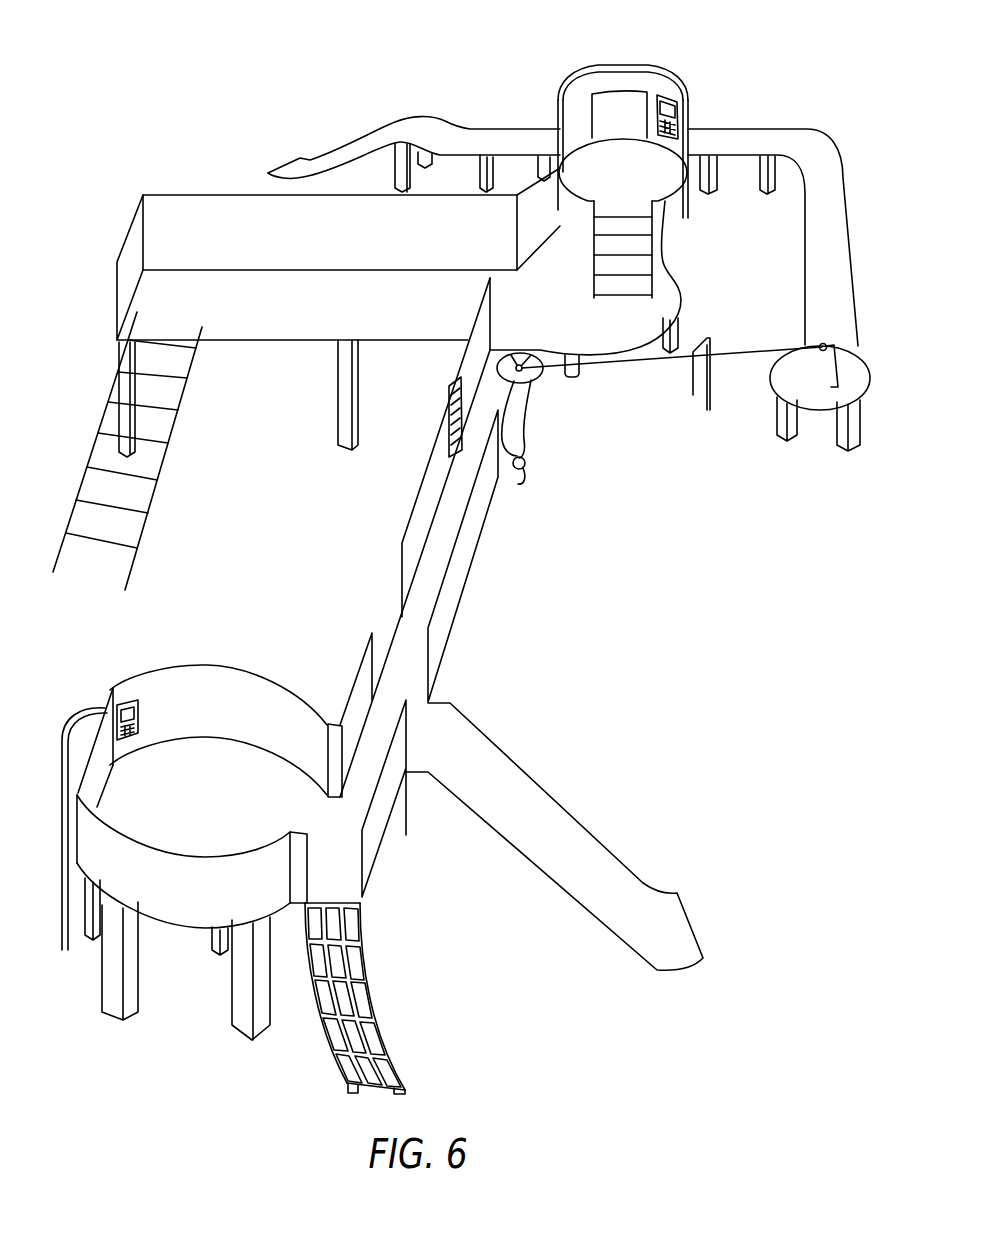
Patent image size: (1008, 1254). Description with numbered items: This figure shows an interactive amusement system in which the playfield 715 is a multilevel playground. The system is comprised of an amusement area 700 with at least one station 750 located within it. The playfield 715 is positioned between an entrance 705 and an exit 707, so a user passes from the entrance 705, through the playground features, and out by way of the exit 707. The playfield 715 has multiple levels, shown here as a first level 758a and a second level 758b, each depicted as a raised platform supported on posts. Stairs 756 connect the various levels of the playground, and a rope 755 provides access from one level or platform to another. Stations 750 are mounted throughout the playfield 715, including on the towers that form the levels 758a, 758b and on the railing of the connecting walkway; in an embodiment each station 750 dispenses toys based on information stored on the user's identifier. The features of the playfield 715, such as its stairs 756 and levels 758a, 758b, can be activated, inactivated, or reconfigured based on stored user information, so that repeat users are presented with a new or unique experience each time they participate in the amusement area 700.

The amusement area 700 is at (240, 77).
The entrance 705 is at (67, 601).
The exit 707 is at (702, 931).
The playfield 715 is at (678, 604).
The station 750 is at (668, 95).
The rope 755 is at (528, 446).
The stairs 756 is at (158, 492).
The level 758a is at (174, 801).
The level 758b is at (647, 183).